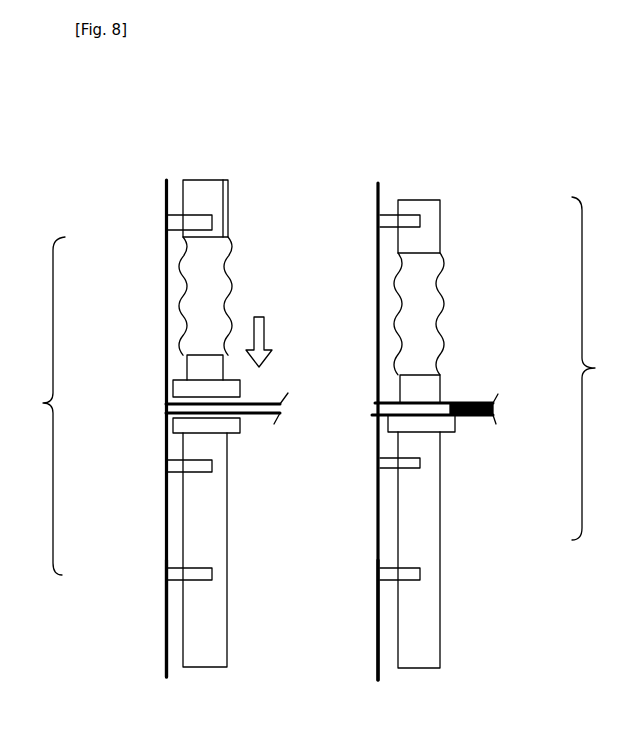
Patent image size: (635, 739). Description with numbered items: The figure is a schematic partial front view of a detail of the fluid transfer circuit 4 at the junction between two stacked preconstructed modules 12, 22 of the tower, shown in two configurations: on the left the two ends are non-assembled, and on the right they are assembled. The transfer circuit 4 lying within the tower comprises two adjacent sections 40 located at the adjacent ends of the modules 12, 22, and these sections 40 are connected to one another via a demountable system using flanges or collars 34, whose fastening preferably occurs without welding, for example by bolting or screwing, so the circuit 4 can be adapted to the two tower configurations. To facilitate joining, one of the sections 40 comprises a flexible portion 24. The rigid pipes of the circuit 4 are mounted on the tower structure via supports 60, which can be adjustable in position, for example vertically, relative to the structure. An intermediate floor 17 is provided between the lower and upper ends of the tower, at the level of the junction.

The transfer circuit 4 is at (316, 386).
The preconstructed module 12 is at (165, 203).
The intermediate floor 17 is at (259, 423).
The preconstructed module 22 is at (166, 612).
The flexible portion 24 is at (183, 295).
The flange 34 is at (173, 391).
The section 40 is at (183, 233).
The support 60 is at (177, 213).